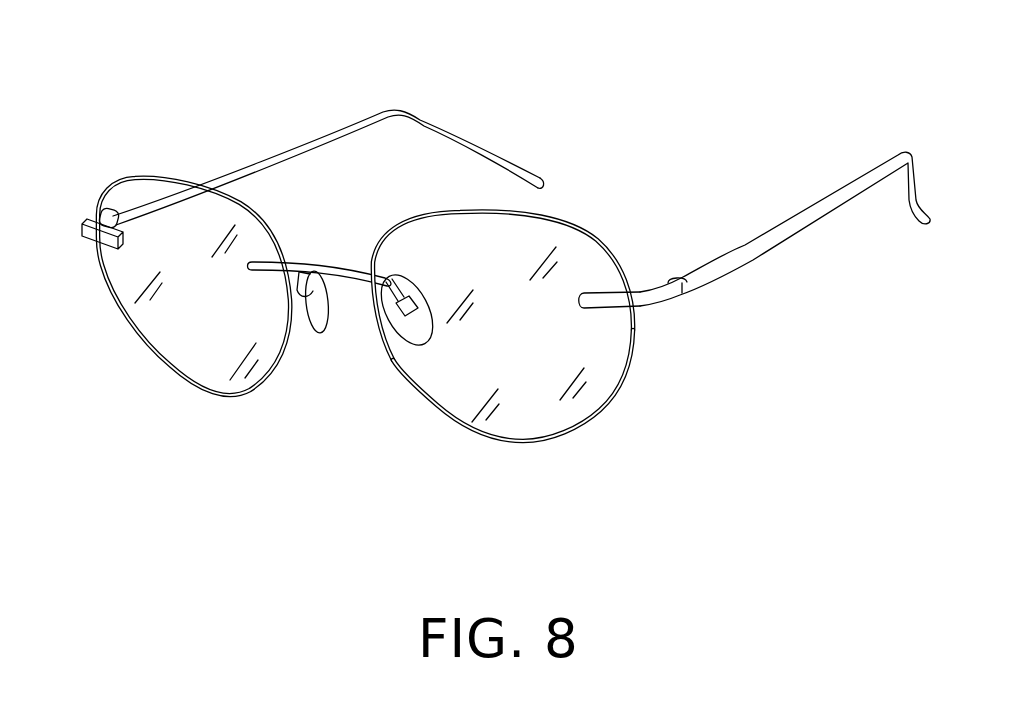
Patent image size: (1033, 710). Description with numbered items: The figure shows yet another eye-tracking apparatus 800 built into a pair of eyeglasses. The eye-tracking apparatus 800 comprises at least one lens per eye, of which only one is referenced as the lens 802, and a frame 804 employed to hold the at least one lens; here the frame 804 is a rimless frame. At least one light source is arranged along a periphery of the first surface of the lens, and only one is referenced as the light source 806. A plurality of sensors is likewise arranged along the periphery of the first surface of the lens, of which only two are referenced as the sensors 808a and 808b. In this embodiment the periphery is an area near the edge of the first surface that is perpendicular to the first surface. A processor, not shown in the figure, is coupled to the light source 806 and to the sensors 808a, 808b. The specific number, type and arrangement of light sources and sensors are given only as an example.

The eye-tracking apparatus 800 is at (660, 125).
The lens 802 is at (553, 415).
The frame 804 is at (735, 262).
The light source 806 is at (645, 318).
The sensor 808a is at (405, 380).
The sensor 808b is at (433, 410).